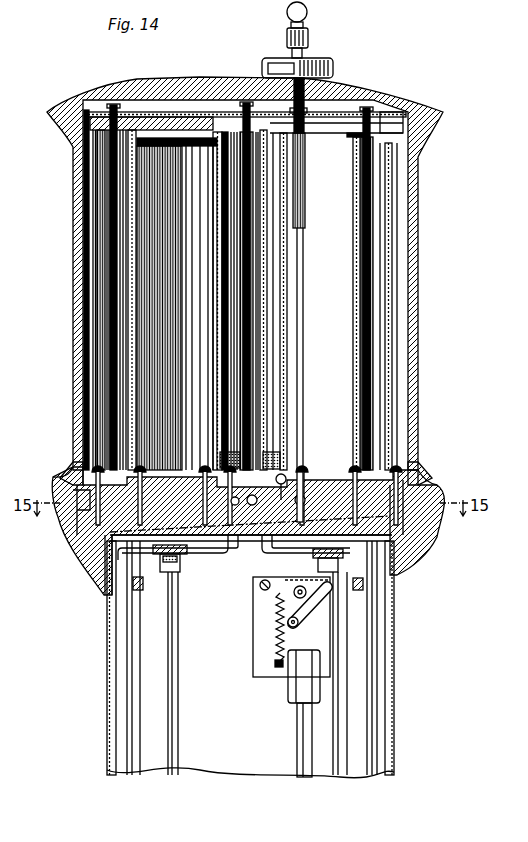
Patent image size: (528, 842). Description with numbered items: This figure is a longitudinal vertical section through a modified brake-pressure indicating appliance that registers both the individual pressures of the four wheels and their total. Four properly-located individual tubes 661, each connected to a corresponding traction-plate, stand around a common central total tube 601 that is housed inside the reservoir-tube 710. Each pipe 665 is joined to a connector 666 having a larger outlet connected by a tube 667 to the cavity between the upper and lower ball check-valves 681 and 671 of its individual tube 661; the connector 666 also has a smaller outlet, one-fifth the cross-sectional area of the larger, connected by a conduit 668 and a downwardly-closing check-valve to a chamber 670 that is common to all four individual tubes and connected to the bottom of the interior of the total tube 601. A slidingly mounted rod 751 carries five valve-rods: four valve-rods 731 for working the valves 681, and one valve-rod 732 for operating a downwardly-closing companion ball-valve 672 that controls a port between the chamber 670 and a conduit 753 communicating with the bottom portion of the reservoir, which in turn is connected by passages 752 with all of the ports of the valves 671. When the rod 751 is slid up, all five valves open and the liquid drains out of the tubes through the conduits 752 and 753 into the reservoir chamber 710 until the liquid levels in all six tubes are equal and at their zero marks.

The valve-rod 731 is at (117, 189).
The tube 661 is at (103, 208).
The rod 751 is at (303, 247).
The valve-rod 732 is at (250, 275).
The total tube 601 is at (260, 302).
The reservoir-tube 710 is at (283, 320).
The ball-valve 672 is at (288, 460).
The chamber 670 is at (283, 470).
The passage 752 is at (177, 553).
The conduit 668 is at (215, 595).
The conduit 753 is at (242, 556).
The upper ball check-valve 681 is at (83, 470).
The lower ball check-valve 671 is at (72, 545).
The tube 667 is at (100, 579).
The connector 666 is at (393, 570).
The pipe 665 is at (342, 622).